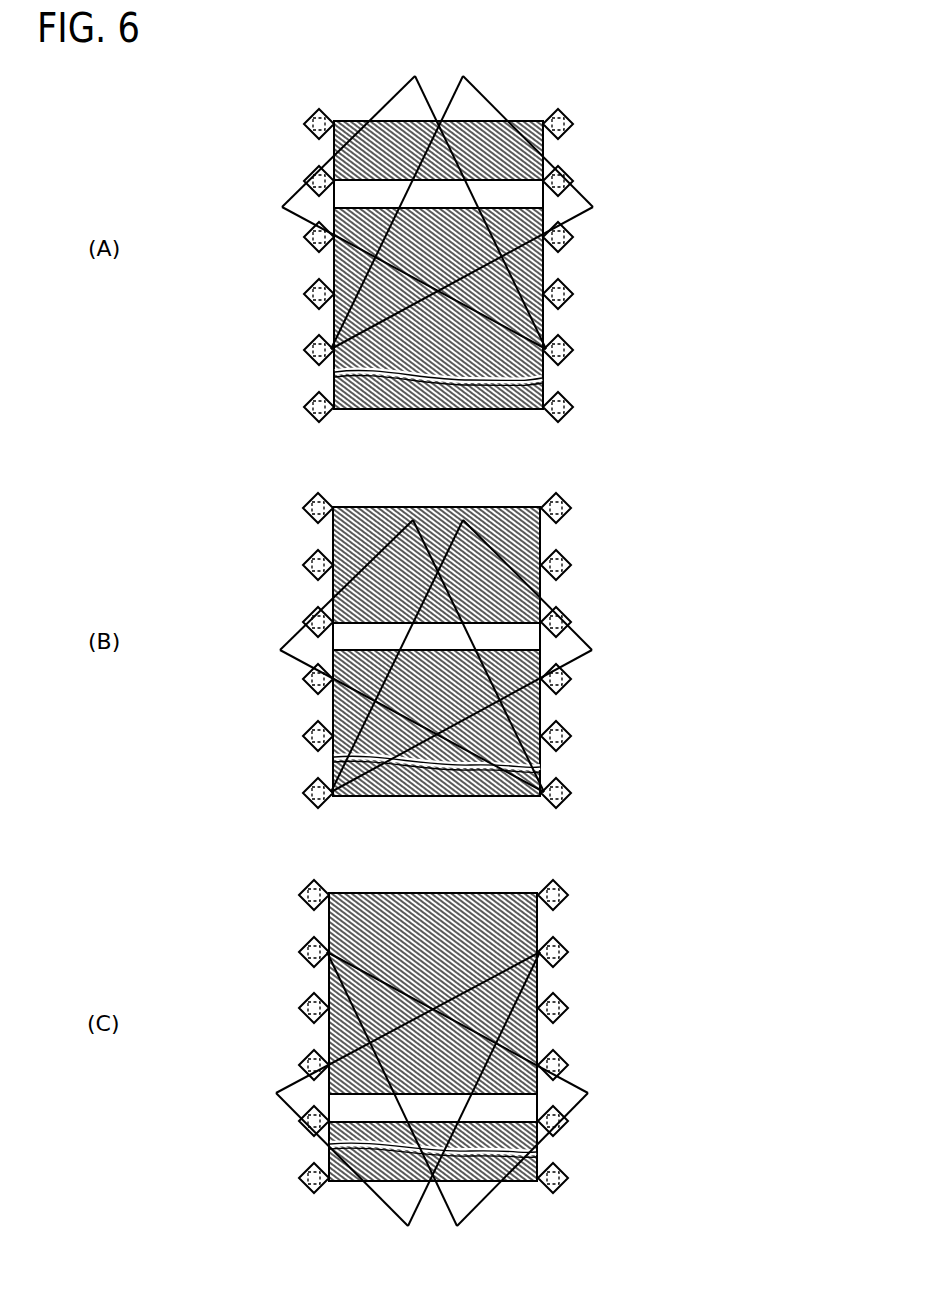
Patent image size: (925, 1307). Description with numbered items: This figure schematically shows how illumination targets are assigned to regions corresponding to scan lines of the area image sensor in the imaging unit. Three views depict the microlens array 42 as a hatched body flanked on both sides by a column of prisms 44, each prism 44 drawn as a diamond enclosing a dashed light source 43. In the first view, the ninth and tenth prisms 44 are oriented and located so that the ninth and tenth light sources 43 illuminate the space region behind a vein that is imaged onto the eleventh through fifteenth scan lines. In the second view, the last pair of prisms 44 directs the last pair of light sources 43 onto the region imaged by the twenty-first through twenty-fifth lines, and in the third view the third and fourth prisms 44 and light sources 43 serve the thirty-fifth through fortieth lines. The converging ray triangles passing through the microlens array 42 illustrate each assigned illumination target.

The microlens array 42 is at (510, 412).
The light source 43 is at (306, 356).
The prism 44 is at (305, 350).